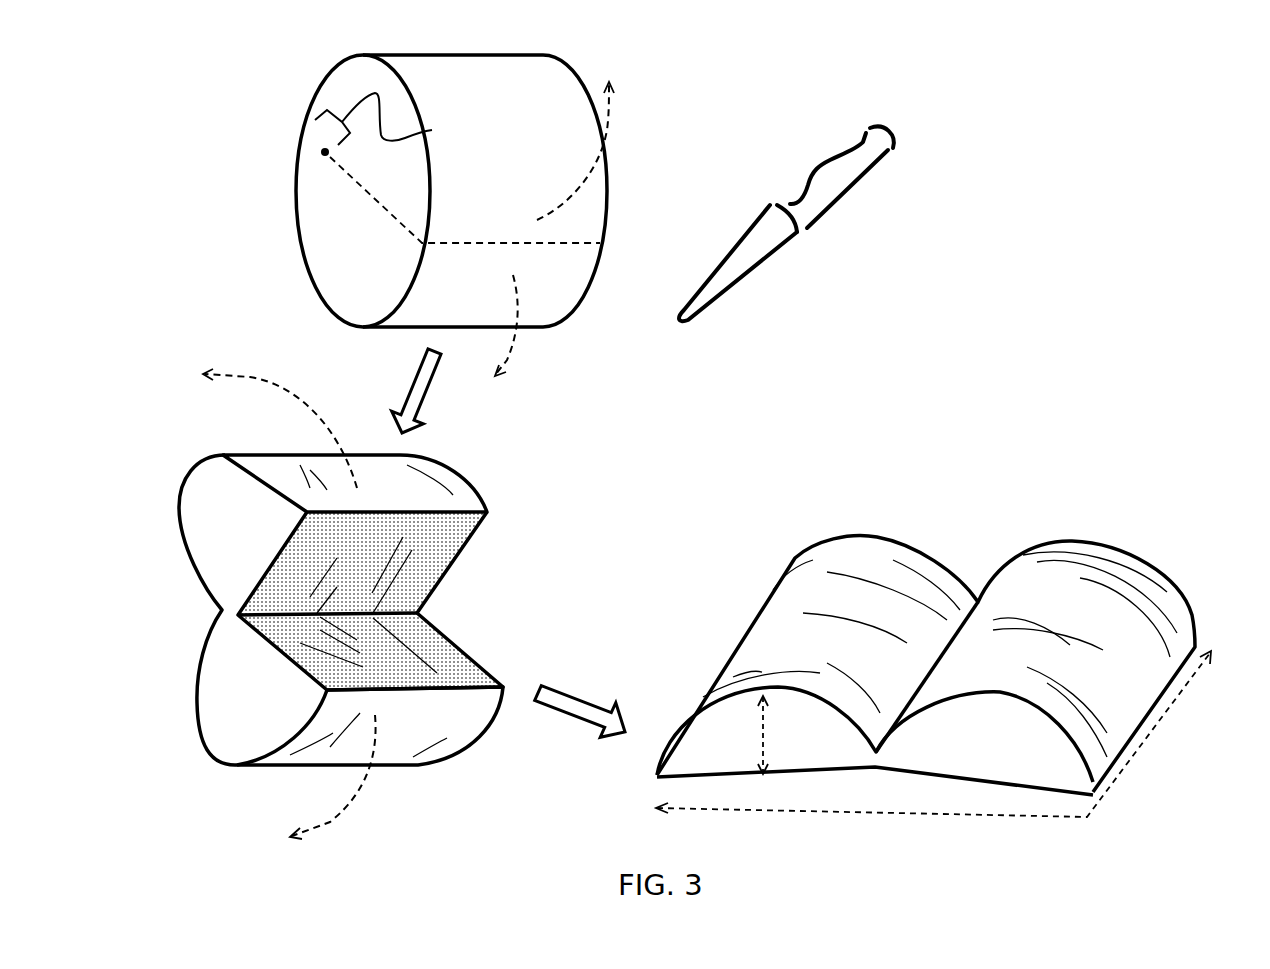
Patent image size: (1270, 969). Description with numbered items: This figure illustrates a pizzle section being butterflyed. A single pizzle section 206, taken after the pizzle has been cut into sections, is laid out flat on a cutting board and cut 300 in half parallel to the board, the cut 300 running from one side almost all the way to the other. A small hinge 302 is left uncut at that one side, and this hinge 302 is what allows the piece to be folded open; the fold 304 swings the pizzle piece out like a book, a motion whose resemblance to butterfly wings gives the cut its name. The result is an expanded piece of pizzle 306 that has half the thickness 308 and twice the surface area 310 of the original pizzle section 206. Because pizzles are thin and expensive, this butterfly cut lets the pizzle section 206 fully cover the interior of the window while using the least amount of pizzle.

The single pizzle section 206 is at (543, 320).
The cut 300 is at (365, 190).
The hinge 302 is at (432, 130).
The fold 304 is at (613, 135).
The expanded piece of pizzle 306 is at (848, 550).
The thickness 308 is at (763, 733).
The surface area 310 is at (1160, 722).